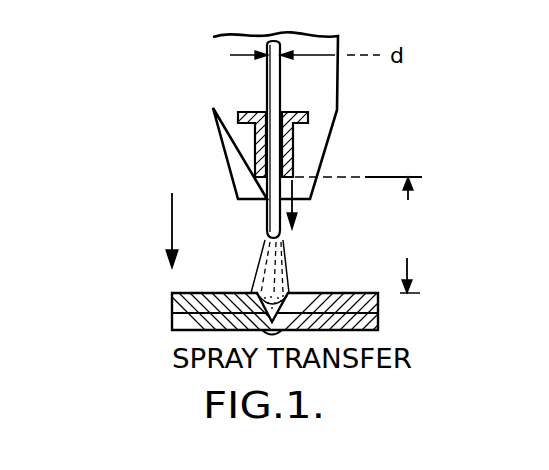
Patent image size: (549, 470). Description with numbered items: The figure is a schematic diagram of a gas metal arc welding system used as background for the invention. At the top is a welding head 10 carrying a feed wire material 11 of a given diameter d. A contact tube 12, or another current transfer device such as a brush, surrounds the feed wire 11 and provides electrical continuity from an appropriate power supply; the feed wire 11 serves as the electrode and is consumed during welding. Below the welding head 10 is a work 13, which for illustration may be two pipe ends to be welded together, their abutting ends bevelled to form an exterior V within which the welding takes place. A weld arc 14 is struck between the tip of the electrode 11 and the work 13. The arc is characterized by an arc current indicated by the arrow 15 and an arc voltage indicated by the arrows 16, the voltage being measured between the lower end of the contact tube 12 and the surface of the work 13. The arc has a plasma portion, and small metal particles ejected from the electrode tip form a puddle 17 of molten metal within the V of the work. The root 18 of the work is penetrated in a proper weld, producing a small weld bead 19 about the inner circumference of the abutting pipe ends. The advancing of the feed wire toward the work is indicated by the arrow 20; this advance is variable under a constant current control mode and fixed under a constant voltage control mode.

The welding head 10 is at (212, 62).
The feed wire material 11 is at (267, 218).
The contact tube 12 is at (310, 124).
The work 13 is at (360, 293).
The weld arc 14 is at (281, 268).
The arc current arrow 15 is at (175, 222).
The arc voltage arrows 16 is at (408, 200).
The puddle 17 is at (270, 296).
The root 18 is at (172, 313).
The weld bead 19 is at (275, 333).
The feed wire advancing arrow 20 is at (292, 187).